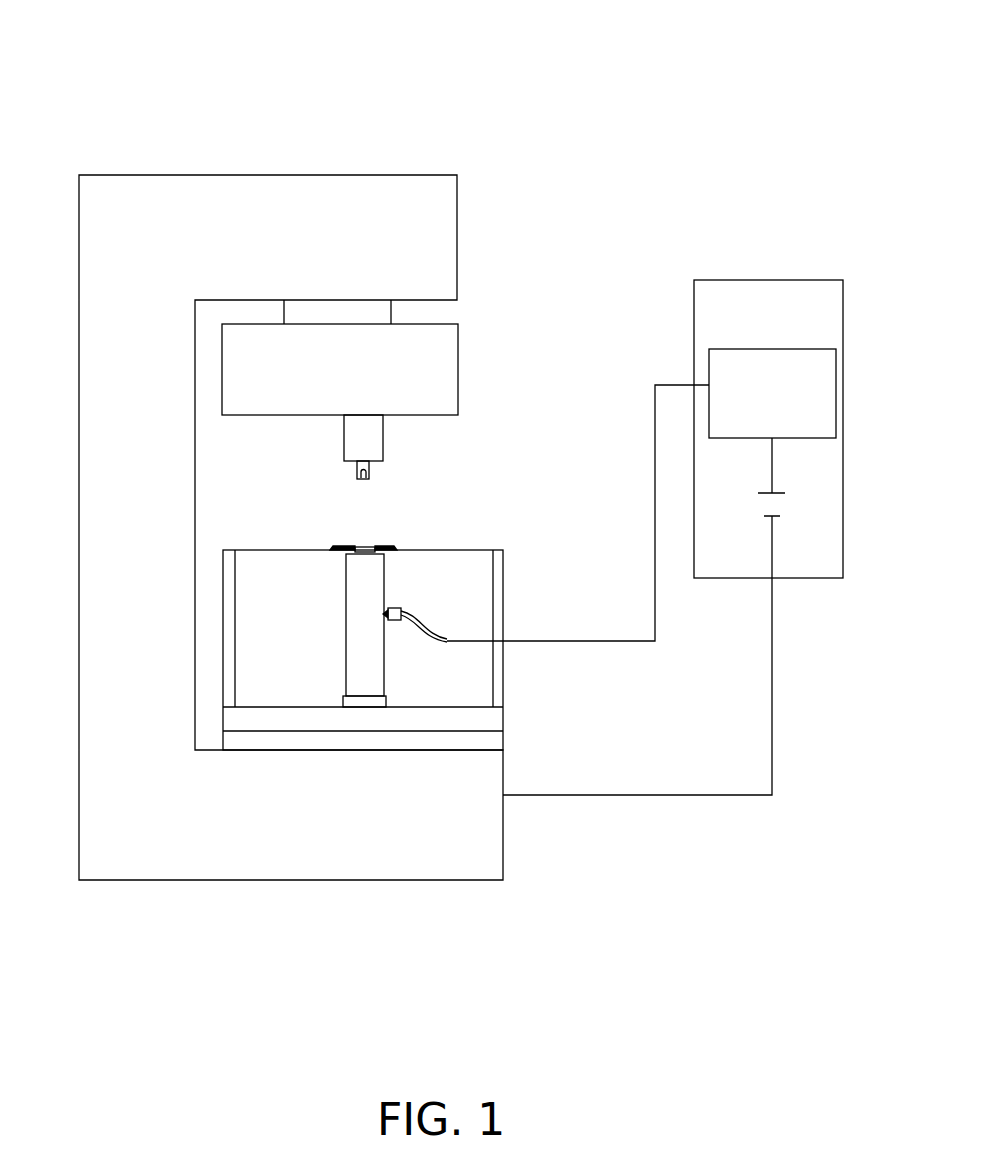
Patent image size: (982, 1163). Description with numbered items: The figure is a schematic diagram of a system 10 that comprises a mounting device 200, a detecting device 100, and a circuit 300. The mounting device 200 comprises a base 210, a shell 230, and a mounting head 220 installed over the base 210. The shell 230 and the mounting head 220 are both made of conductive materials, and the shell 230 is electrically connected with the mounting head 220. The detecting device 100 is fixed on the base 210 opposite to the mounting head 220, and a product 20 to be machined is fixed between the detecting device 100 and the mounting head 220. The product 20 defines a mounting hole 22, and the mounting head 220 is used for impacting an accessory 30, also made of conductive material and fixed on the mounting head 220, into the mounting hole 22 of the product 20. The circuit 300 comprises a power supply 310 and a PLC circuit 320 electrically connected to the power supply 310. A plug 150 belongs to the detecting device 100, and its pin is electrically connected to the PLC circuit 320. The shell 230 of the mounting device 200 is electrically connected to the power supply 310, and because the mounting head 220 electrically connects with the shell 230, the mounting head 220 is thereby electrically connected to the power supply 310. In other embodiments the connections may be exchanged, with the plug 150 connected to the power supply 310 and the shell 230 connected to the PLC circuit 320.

The system 10 is at (440, 32).
The mounting device 200 is at (178, 825).
The shell 230 is at (458, 362).
The mounting head 220 is at (373, 442).
The accessory 30 is at (358, 472).
The base 210 is at (473, 722).
The detecting device 100 is at (355, 604).
The plug 150 is at (398, 612).
The product 20 is at (375, 548).
The mounting hole 22 is at (360, 548).
The circuit 300 is at (774, 280).
The PLC circuit 320 is at (762, 349).
The power supply 310 is at (770, 507).